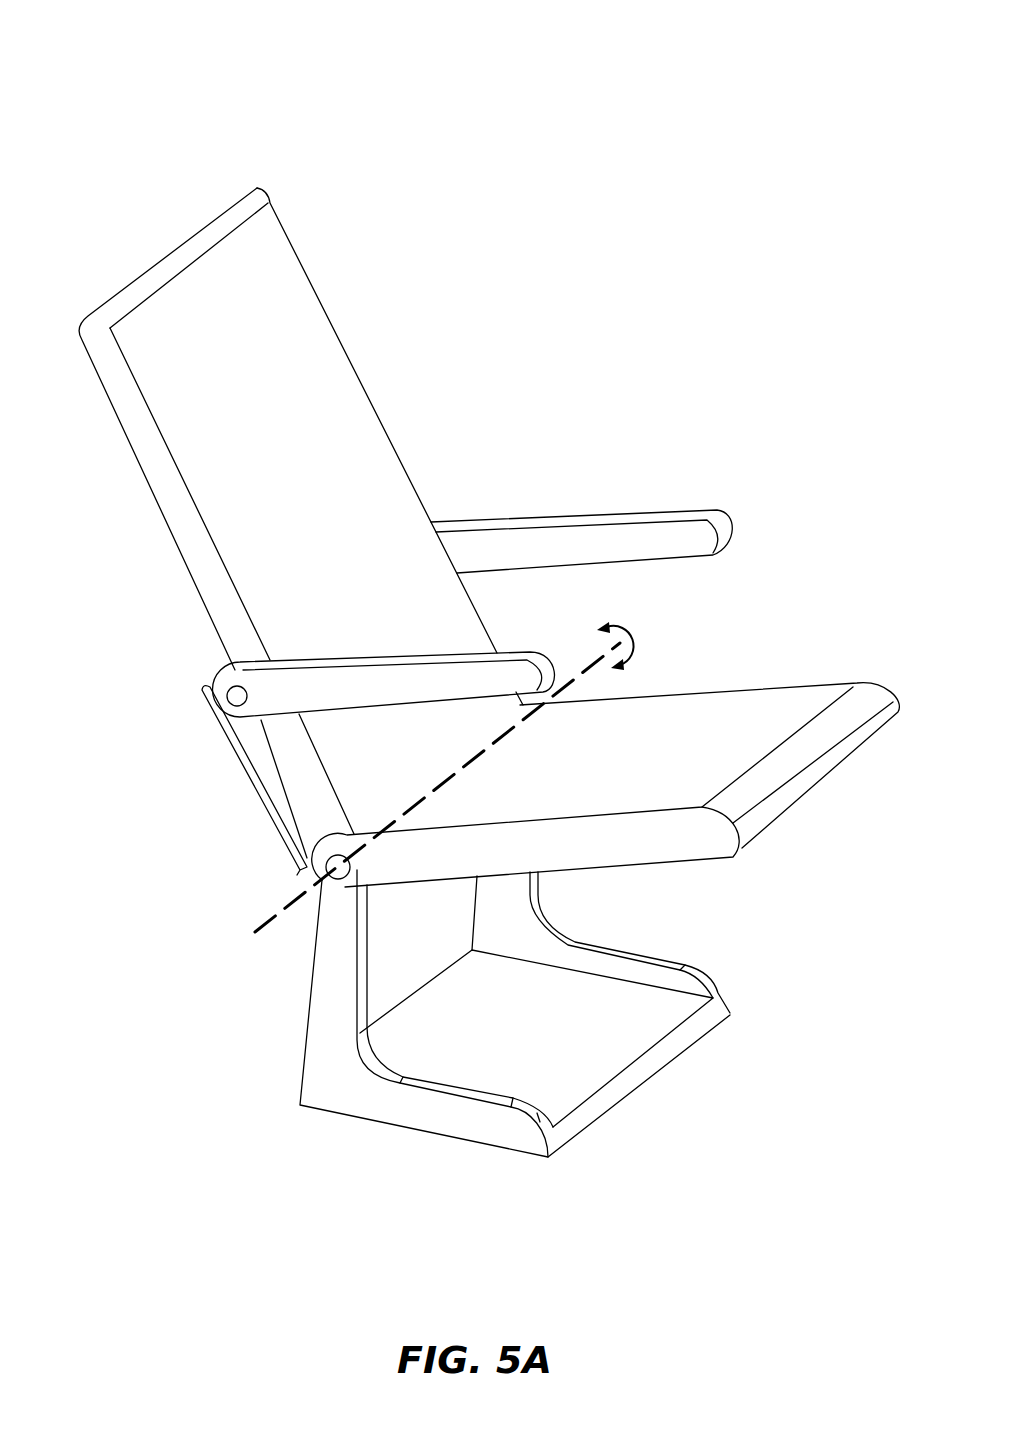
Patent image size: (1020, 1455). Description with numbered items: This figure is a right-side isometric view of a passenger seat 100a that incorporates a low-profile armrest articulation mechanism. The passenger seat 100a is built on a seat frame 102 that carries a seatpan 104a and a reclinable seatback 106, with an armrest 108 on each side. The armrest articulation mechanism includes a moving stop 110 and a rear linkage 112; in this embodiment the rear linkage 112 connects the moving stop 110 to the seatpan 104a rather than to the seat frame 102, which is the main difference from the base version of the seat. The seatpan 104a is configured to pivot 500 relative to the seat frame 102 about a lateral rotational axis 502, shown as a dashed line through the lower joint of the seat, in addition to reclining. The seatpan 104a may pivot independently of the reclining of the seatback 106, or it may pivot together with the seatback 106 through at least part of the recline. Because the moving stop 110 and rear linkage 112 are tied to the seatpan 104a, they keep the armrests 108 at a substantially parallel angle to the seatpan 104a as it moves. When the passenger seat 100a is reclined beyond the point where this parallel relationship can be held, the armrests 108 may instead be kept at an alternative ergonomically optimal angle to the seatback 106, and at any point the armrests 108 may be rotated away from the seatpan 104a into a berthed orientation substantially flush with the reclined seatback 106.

The passenger seat 100a is at (127, 80).
The seat frame 102 is at (313, 1047).
The seatpan 104a is at (733, 740).
The seatback 106 is at (367, 433).
The armrest 108 is at (482, 688).
The moving stop 110 is at (210, 683).
The rear linkage 112 is at (235, 762).
The pivot 500 is at (628, 637).
The lateral rotational axis 502 is at (270, 927).